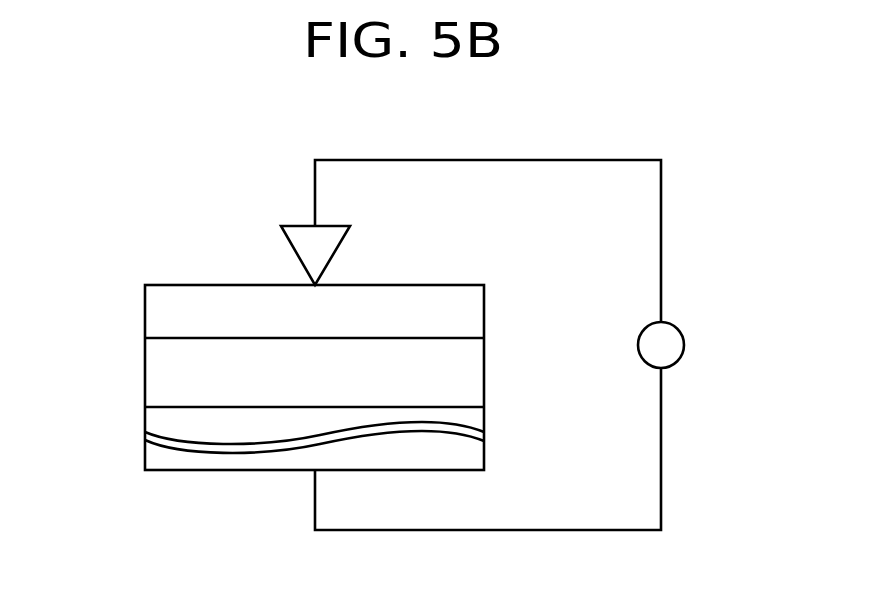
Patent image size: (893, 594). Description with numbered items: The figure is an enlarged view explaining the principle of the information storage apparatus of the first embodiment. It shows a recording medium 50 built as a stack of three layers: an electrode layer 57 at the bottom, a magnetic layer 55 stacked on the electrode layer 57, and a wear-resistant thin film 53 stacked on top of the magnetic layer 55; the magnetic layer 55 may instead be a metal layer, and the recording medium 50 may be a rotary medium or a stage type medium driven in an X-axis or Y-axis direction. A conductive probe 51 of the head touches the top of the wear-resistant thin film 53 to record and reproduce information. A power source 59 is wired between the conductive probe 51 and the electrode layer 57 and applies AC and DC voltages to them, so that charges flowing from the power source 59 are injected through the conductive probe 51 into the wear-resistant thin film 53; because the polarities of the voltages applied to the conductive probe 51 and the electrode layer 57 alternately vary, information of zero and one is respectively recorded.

The recording medium 50 is at (177, 487).
The conductive probe 51 is at (303, 241).
The wear-resistant thin film 53 is at (158, 311).
The magnetic layer 55 is at (158, 372).
The electrode layer 57 is at (158, 420).
The power source 59 is at (684, 345).